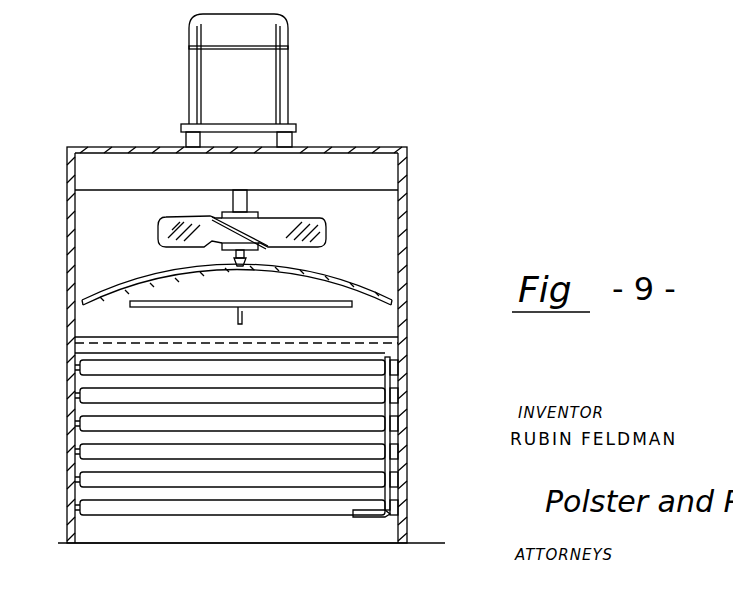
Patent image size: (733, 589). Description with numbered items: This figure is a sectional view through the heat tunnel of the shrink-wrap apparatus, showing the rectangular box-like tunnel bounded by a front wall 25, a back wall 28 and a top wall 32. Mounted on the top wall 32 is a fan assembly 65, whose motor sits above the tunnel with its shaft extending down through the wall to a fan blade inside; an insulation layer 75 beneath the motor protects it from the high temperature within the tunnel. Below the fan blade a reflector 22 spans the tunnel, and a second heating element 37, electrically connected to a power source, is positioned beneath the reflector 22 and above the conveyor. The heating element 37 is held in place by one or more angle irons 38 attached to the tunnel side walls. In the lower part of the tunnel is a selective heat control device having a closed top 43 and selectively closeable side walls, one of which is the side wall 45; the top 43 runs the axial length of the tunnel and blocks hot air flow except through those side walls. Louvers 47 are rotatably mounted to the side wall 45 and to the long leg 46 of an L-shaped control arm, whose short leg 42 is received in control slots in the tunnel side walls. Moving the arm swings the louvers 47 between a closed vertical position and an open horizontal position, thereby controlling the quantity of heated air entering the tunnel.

The reflector 22 is at (322, 270).
The front wall 25 is at (60, 195).
The back wall 28 is at (406, 201).
The top wall 32 is at (335, 140).
The second heating element 37 is at (316, 311).
The angle iron 38 is at (230, 322).
The short leg 42 is at (378, 520).
The closed top 43 is at (390, 338).
The selectively closeable side wall 45 is at (395, 344).
The long leg 46 is at (402, 492).
The louvers 47 is at (370, 371).
The fan assembly 65 is at (292, 58).
The insulation layer 75 is at (388, 165).